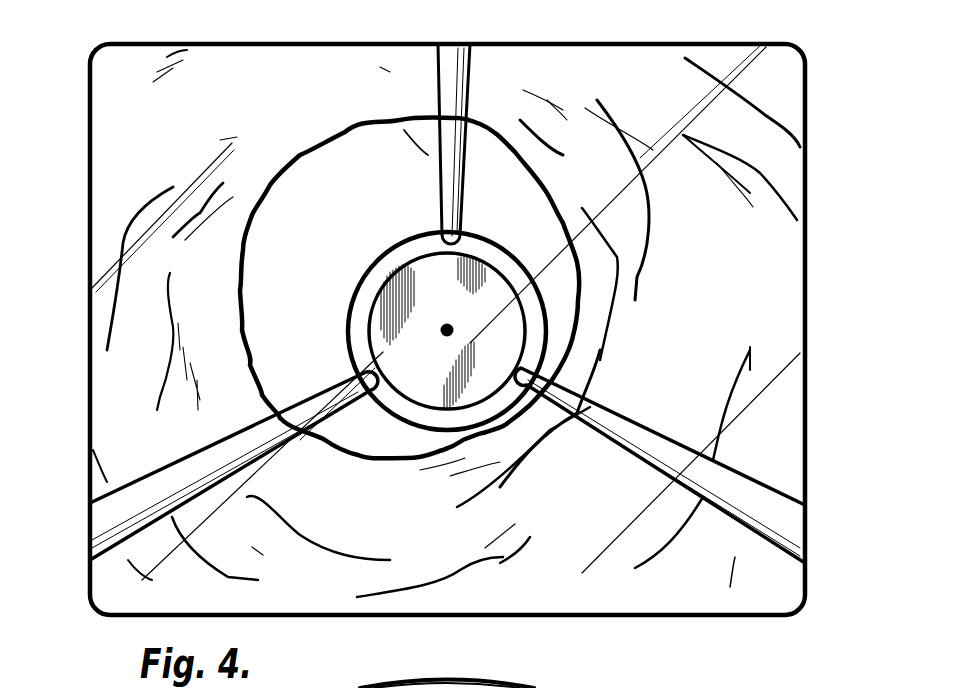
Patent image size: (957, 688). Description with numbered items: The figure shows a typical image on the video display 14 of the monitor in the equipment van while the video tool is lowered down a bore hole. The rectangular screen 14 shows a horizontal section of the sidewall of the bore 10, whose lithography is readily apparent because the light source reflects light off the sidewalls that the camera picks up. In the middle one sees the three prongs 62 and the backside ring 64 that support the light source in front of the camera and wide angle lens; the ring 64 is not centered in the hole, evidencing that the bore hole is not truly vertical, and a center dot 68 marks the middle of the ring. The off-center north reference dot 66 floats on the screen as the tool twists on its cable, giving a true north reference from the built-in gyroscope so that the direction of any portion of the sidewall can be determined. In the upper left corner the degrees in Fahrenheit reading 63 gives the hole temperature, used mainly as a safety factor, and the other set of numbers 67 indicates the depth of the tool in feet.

The bore 10 is at (133, 350).
The video display 14 is at (248, 52).
The prongs 62 is at (452, 52).
The degrees in Fahrenheit reading 63 is at (140, 105).
The backside ring 64 is at (417, 362).
The north reference dot 66 is at (360, 208).
The depth numbers 67 is at (412, 308).
The center dot marker 68 is at (437, 331).